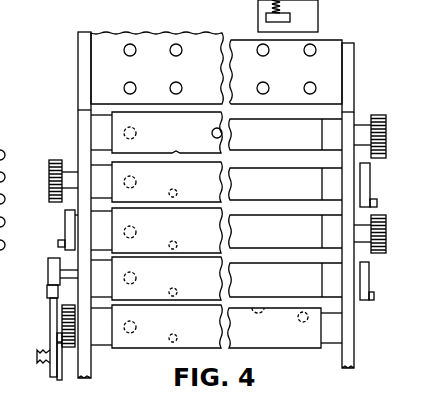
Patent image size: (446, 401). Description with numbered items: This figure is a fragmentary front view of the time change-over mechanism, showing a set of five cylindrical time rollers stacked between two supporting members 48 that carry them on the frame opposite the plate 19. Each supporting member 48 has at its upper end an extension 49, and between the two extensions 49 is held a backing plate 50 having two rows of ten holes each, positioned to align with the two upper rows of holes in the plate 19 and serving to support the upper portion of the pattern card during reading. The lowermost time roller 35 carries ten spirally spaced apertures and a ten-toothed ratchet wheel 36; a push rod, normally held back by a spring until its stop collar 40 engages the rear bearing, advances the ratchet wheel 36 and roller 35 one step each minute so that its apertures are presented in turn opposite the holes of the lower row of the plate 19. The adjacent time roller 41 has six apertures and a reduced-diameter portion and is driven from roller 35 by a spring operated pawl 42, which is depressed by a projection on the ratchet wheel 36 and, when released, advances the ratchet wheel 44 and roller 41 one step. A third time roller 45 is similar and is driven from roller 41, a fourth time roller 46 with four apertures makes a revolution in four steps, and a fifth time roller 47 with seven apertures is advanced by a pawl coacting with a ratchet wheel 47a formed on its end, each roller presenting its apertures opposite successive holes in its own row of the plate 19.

The plate 19 is at (7, 184).
The lowermost time roller 35 is at (286, 343).
The ratchet wheel 36 is at (70, 347).
The stop collar 40 is at (290, 8).
The time roller 41 is at (310, 279).
The spring operated pawl 42 is at (52, 321).
The ratchet wheel 44 is at (48, 276).
The third time roller 45 is at (305, 230).
The fourth time roller 46 is at (312, 183).
The fifth time roller 47 is at (308, 140).
The ratchet wheel 47a is at (386, 128).
The supporting members 48 is at (86, 373).
The extension 49 is at (82, 89).
The backing plate 50 is at (152, 43).